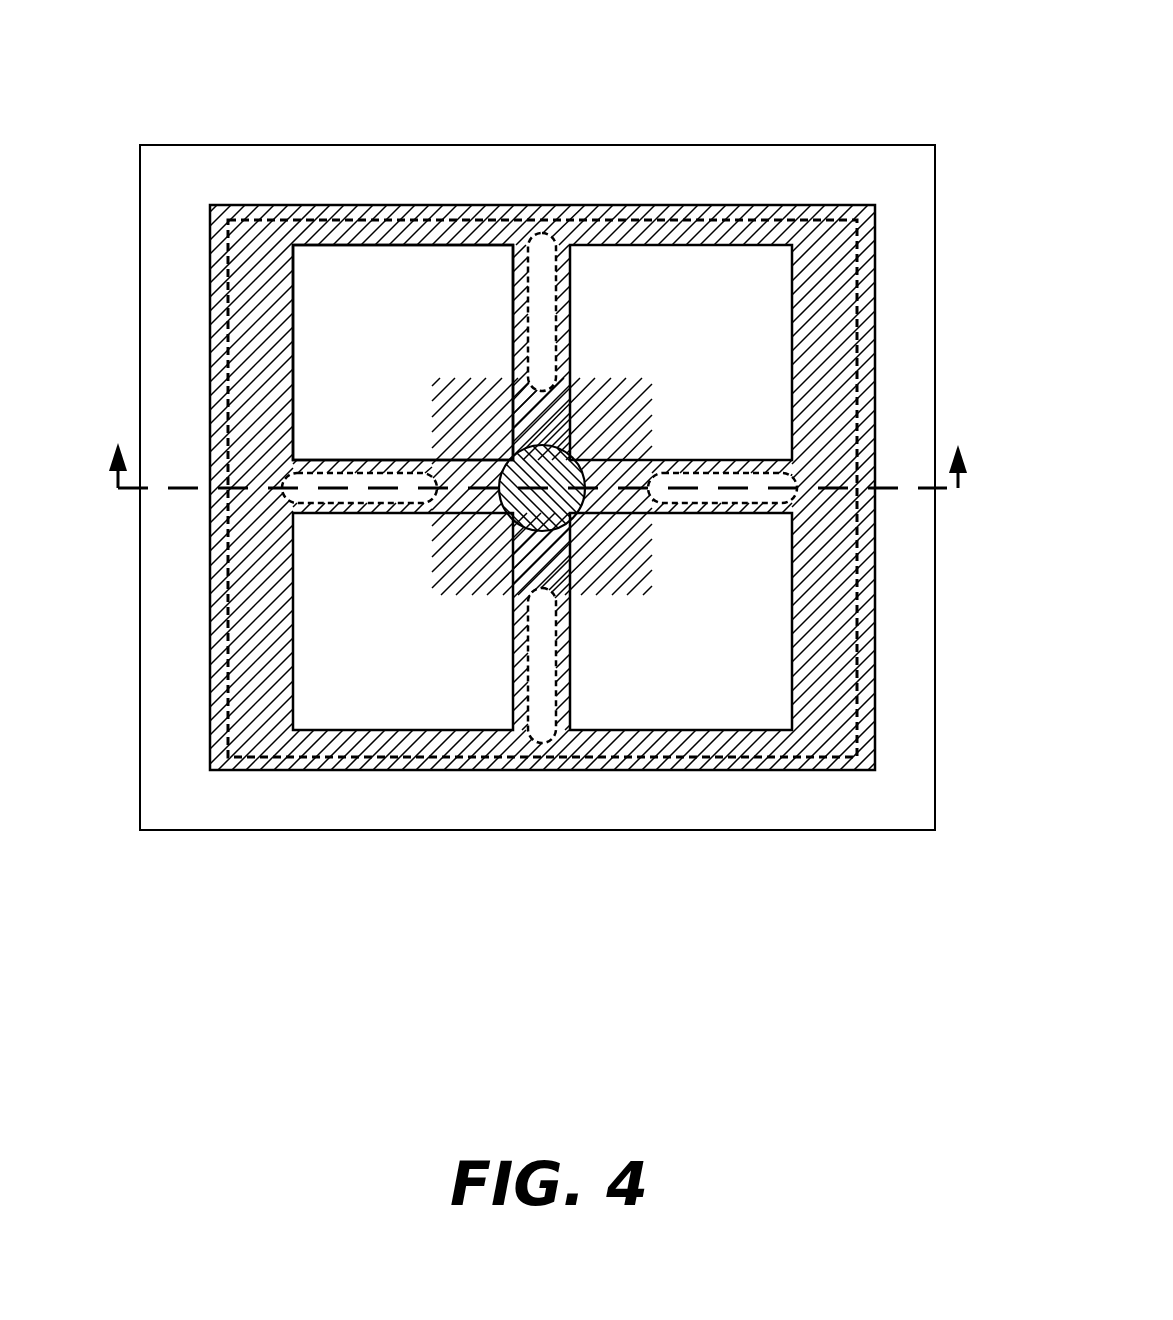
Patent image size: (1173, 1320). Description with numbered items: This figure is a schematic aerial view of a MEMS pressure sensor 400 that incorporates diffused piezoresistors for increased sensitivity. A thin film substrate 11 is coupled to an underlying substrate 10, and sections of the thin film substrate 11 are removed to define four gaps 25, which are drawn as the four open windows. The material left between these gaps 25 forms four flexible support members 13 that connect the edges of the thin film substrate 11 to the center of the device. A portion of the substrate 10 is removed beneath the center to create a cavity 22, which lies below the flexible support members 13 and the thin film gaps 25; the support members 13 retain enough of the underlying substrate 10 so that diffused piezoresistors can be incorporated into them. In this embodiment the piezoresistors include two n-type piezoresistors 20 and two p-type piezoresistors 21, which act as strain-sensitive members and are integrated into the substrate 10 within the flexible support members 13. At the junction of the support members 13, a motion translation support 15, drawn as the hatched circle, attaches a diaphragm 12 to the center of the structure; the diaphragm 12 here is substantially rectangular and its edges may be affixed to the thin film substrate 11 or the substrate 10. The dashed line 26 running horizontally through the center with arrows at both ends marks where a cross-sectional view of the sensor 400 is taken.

The MEMS pressure sensor 400 is at (888, 106).
The substrate 10 is at (138, 788).
The thin film substrate 11 is at (258, 203).
The diaphragm 12 is at (855, 662).
The flexible support members 13 is at (568, 353).
The motion translation support 15 is at (569, 520).
The n-type piezoresistors 20 is at (795, 470).
The p-type piezoresistors 21 is at (580, 237).
The cavity 22 is at (375, 400).
The gaps 25 is at (400, 243).
The dashed line 26 is at (815, 488).